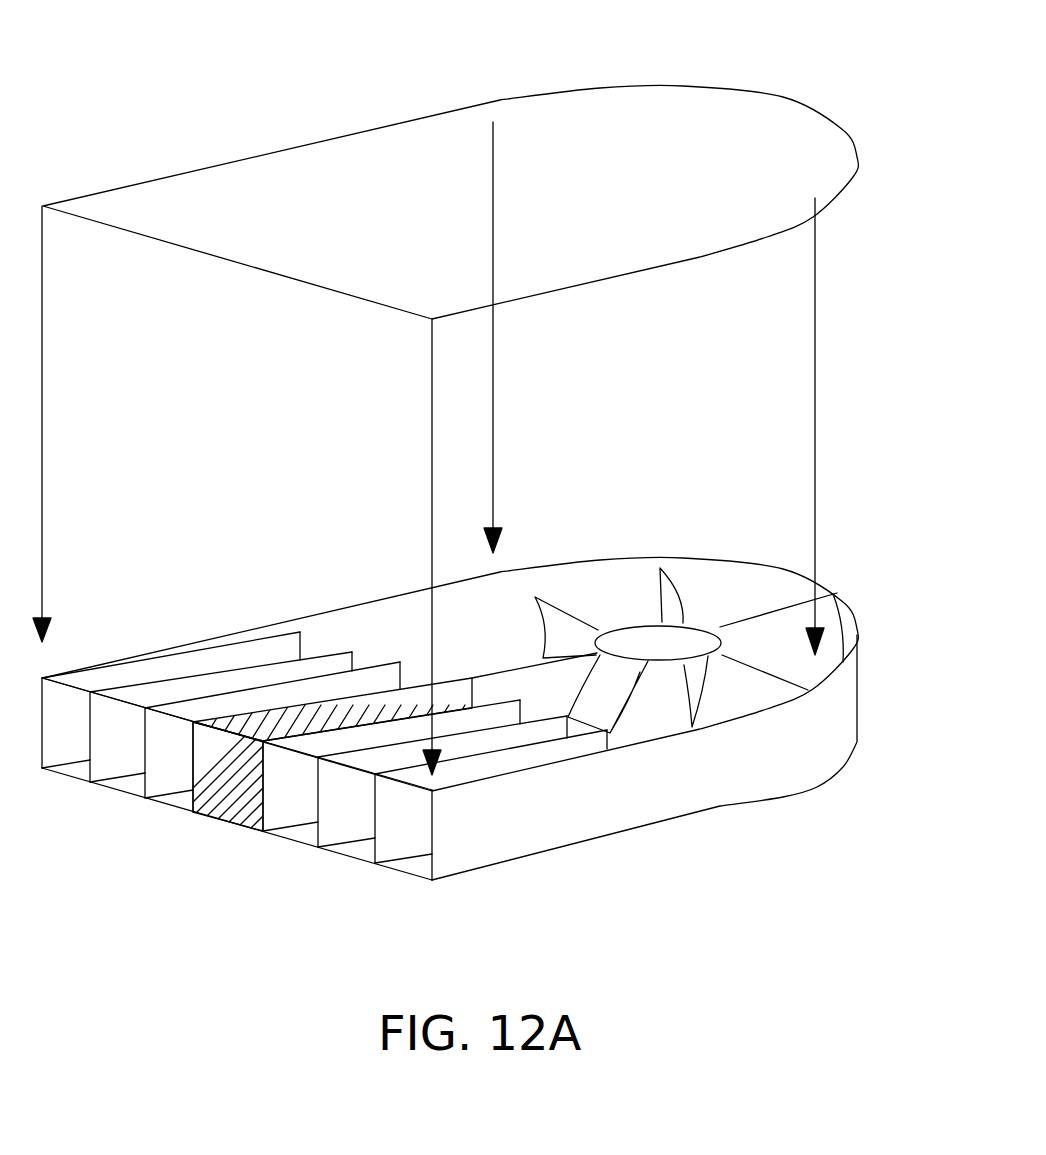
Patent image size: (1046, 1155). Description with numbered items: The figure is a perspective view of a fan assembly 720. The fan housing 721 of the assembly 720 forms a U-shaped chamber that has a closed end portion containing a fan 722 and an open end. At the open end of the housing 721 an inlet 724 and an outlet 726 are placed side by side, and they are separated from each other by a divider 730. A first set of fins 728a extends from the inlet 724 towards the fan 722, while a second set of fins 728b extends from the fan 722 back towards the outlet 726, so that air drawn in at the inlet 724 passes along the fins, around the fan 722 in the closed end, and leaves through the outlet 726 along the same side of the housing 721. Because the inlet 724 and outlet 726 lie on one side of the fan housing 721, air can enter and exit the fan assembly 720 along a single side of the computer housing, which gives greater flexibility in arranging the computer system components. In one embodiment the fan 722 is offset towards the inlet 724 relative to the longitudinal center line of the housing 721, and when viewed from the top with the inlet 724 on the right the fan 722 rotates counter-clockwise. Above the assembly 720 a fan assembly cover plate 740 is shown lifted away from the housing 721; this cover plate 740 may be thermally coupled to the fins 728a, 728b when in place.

The fan assembly 720 is at (121, 74).
The fan housing 721 is at (488, 842).
The fan 722 is at (647, 643).
The inlet 724 is at (358, 858).
The outlet 726 is at (113, 795).
The first set of fins 728a is at (503, 752).
The second set of fins 728b is at (212, 685).
The divider 730 is at (220, 808).
The fan assembly cover plate 740 is at (692, 168).